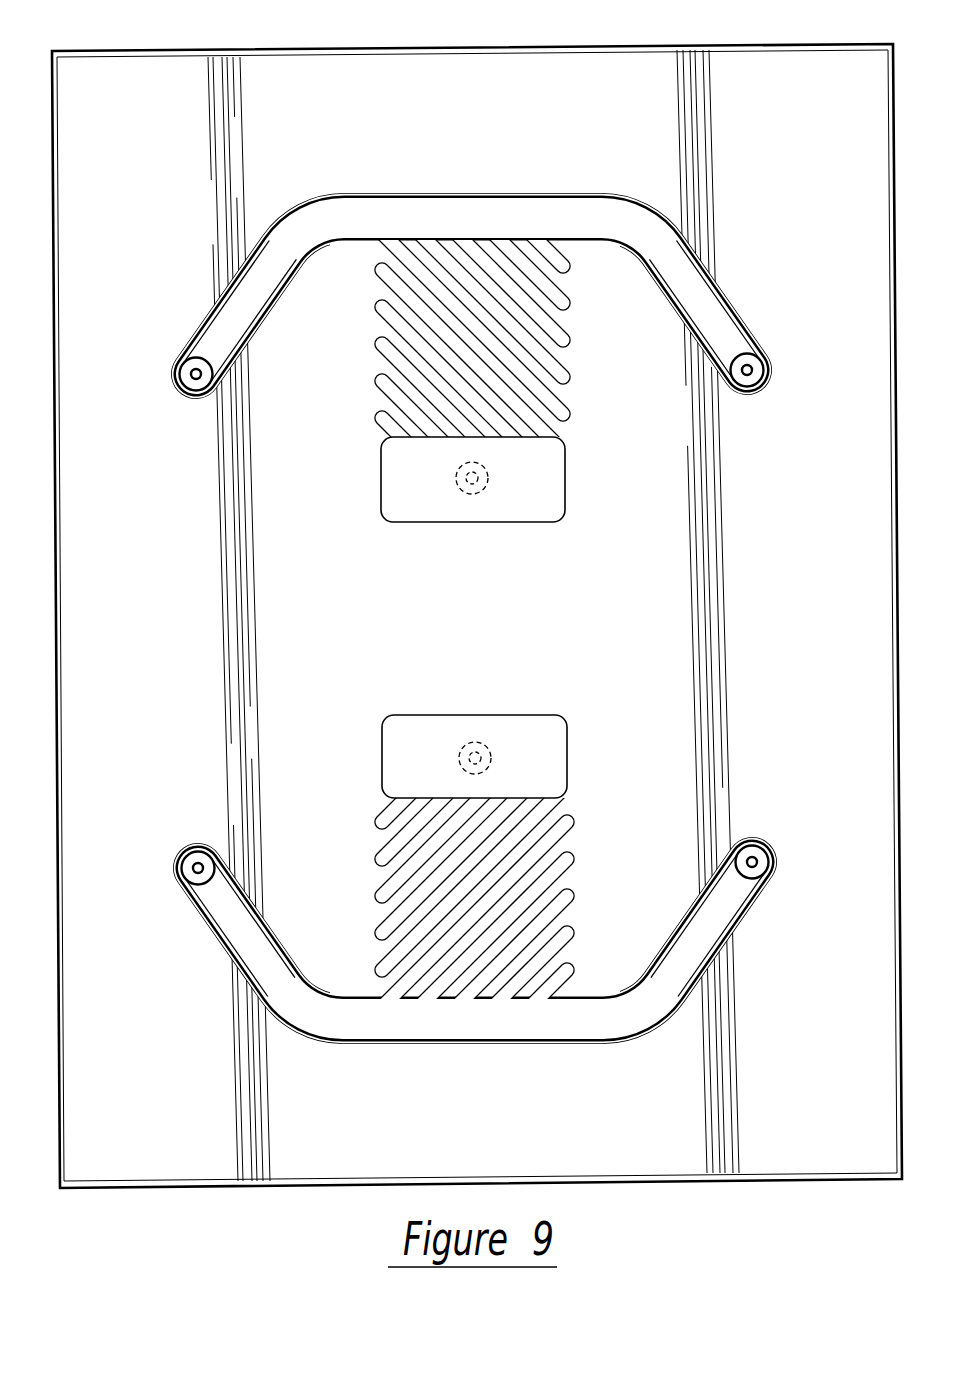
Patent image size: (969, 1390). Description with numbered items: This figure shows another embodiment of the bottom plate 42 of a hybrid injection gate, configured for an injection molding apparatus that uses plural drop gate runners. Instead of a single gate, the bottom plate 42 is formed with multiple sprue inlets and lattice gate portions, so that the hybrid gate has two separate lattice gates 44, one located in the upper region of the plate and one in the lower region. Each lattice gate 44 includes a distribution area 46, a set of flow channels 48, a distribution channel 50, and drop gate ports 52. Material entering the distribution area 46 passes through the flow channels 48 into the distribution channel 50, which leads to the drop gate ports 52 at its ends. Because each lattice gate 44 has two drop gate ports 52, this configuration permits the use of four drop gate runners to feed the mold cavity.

The bottom plate 42 is at (365, 97).
The lattice gate 44 is at (750, 280).
The distribution area 46 is at (545, 517).
The flow channels 48 is at (390, 327).
The distribution channel 50 is at (462, 212).
The drop gate ports 52 is at (196, 381).